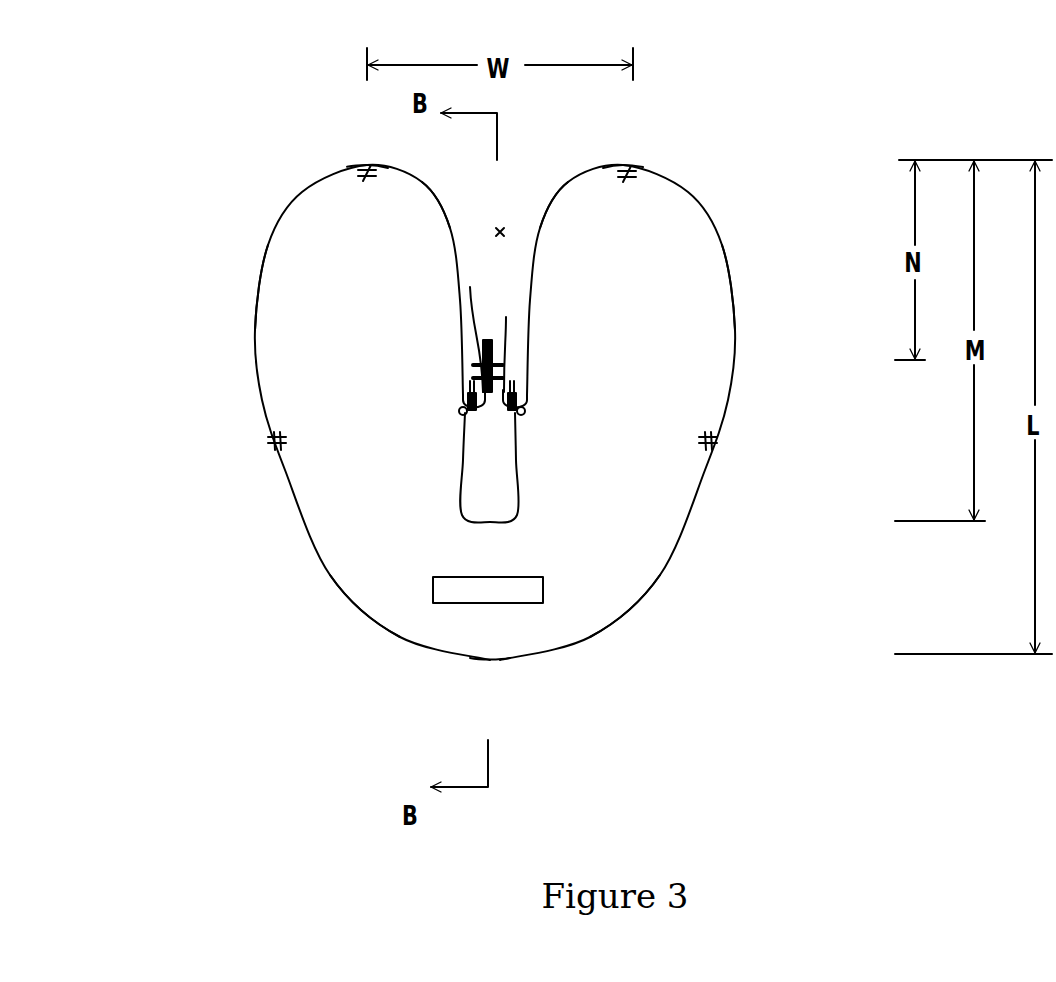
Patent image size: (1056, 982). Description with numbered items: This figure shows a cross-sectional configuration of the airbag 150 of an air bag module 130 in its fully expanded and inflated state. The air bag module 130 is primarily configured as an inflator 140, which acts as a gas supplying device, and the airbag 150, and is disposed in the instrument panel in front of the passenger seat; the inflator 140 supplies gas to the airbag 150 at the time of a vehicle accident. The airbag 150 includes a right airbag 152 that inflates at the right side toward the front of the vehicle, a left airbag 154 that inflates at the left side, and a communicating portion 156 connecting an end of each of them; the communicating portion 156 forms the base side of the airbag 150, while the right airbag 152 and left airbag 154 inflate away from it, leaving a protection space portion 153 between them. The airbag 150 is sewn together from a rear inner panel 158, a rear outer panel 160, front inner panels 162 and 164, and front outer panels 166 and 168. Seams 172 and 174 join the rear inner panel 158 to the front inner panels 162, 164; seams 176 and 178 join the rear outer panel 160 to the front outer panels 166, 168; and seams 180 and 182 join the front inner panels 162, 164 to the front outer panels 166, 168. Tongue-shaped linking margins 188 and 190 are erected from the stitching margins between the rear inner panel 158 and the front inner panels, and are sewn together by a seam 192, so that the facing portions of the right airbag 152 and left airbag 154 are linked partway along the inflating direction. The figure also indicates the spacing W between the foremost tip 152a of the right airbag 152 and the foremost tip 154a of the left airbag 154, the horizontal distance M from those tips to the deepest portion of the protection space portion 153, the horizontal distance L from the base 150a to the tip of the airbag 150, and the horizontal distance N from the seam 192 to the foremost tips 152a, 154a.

The air bag module 130 is at (691, 602).
The inflator 140 is at (508, 606).
The airbag 150 is at (735, 108).
The base 150a is at (487, 660).
The right airbag 152 is at (303, 190).
The foremost tip of the right airbag 152a is at (367, 163).
The protection space portion 153 is at (503, 228).
The left airbag 154 is at (712, 222).
The foremost tip of the left airbag 154a is at (627, 165).
The communicating portion 156 is at (569, 567).
The rear inner panel 158 is at (518, 485).
The rear outer panel 160 is at (345, 602).
The front inner panel 162 is at (432, 188).
The front inner panel 164 is at (548, 187).
The front outer panel 166 is at (255, 332).
The front outer panel 168 is at (736, 352).
The seam 172 is at (463, 411).
The seam 174 is at (520, 411).
The seam 176 is at (280, 437).
The seam 178 is at (707, 437).
The seam 180 is at (358, 182).
The seam 182 is at (628, 184).
The linking margin 188 is at (470, 320).
The linking margin 190 is at (500, 336).
The seam 192 is at (500, 361).